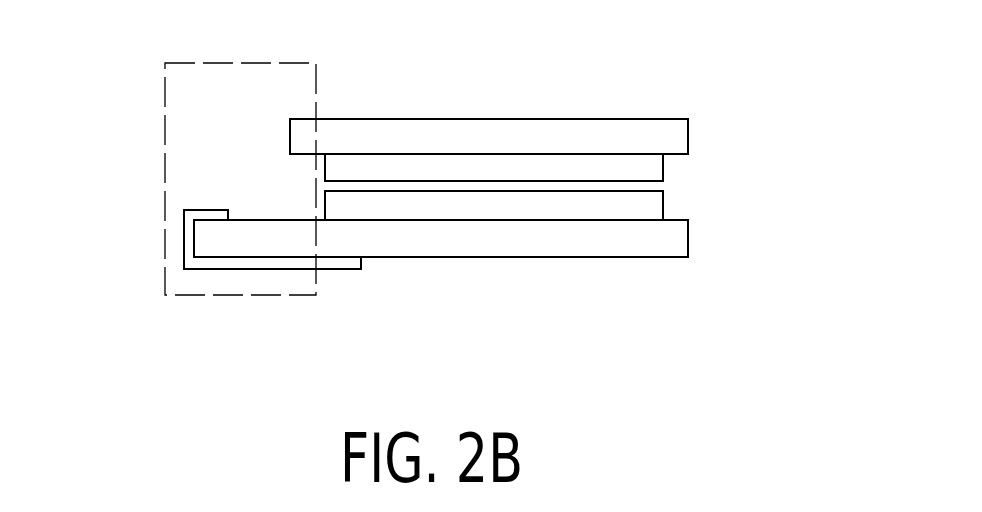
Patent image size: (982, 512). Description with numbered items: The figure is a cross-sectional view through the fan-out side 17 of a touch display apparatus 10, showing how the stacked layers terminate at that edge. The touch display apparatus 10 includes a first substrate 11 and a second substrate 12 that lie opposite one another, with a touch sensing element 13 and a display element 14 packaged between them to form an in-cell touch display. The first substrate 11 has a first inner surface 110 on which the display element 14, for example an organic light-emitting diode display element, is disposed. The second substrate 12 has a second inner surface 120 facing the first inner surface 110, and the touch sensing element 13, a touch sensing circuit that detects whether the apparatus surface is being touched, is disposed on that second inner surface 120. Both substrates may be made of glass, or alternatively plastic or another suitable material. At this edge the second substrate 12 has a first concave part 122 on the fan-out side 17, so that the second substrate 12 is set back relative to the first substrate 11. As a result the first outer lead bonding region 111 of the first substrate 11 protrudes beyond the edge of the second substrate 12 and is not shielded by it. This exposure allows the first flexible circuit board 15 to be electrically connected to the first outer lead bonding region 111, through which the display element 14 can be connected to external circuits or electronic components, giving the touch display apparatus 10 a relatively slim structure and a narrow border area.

The touch display apparatus 10 is at (737, 340).
The first substrate 11 is at (668, 242).
The second substrate 12 is at (670, 138).
The touch sensing element 13 is at (640, 172).
The display element 14 is at (640, 207).
The first flexible circuit board 15 is at (184, 244).
The fan-out side 17 is at (265, 298).
The first inner surface 110 is at (600, 222).
The first outer lead bonding region 111 is at (239, 209).
The second inner surface 120 is at (597, 152).
The first concave part 122 is at (283, 125).